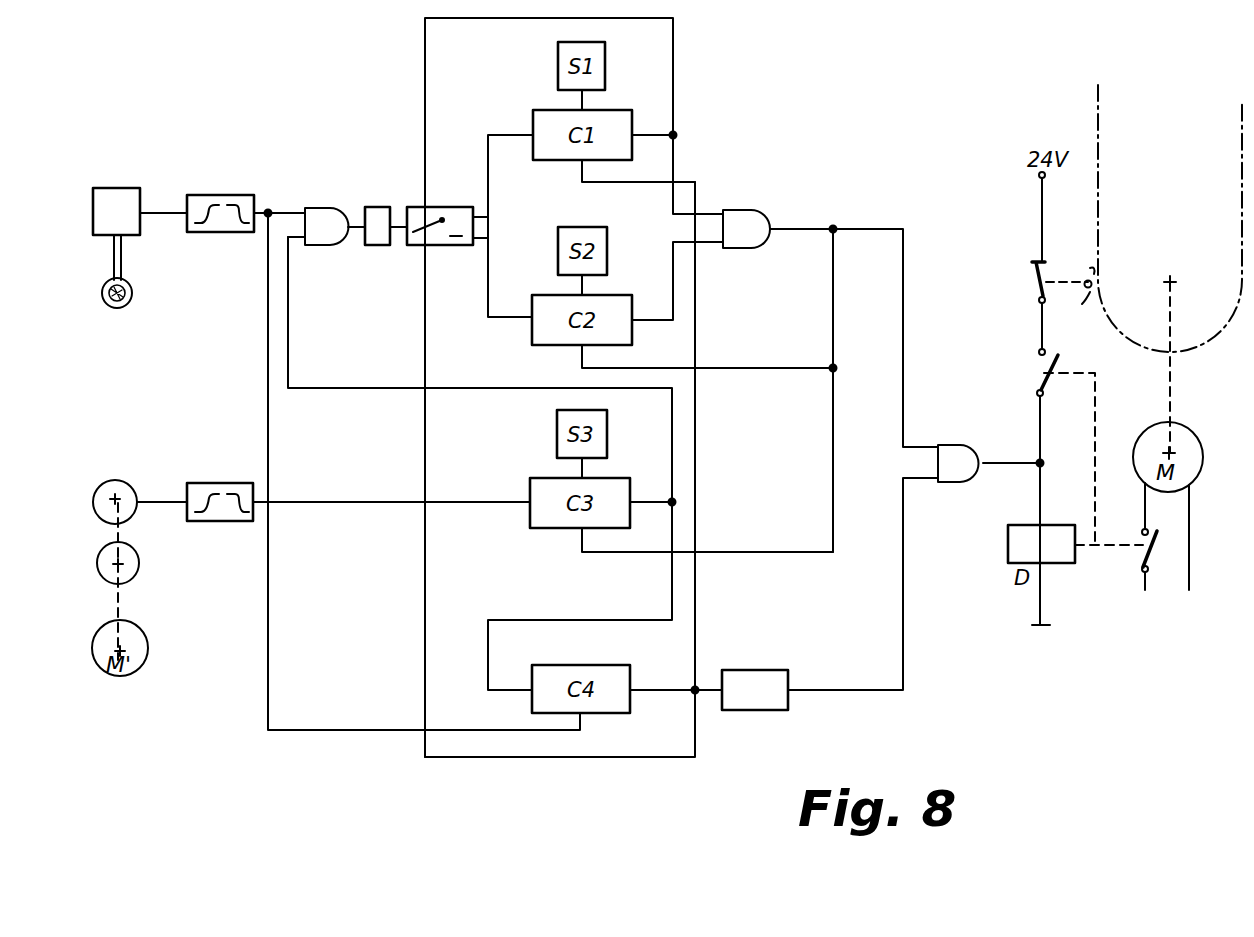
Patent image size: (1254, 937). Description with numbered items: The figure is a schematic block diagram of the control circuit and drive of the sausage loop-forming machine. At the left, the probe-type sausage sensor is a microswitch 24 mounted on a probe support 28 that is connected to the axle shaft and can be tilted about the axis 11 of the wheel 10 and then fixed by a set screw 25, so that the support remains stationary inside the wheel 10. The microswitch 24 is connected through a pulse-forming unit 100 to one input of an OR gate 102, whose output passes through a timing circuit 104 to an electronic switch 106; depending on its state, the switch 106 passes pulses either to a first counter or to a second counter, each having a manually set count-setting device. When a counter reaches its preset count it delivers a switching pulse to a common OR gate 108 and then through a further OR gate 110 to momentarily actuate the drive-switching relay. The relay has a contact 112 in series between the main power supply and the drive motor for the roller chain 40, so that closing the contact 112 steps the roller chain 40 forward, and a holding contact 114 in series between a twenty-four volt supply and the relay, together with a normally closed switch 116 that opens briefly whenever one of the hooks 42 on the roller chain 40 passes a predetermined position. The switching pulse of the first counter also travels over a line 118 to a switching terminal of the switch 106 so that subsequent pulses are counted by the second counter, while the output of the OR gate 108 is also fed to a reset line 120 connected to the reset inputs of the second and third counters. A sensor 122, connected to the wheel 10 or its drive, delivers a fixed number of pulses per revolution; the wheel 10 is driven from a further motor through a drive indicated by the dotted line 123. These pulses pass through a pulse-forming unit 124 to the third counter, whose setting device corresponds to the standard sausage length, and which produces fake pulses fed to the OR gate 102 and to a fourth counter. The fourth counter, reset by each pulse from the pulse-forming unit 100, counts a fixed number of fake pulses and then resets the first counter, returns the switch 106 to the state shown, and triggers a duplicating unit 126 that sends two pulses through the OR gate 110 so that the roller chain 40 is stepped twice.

The wheel 10 is at (139, 571).
The axis 11 is at (108, 310).
The microswitch 24 is at (108, 195).
The set screw 25 is at (131, 286).
The probe support 28 is at (124, 260).
The roller chain 40 is at (1238, 264).
The hooks 42 is at (1080, 300).
The pulse-forming unit 100 is at (200, 195).
The OR gate 102 is at (314, 208).
The timing circuit 104 is at (376, 207).
The electronic switch 106 is at (444, 207).
The OR gate 108 is at (746, 210).
The OR gate 110 is at (956, 445).
The contact 112 is at (1154, 556).
The holding contact 114 is at (1044, 373).
The normally closed switch 116 is at (1036, 290).
The line 118 is at (455, 18).
The reset line 120 is at (835, 310).
The sensor 122 is at (116, 481).
The drive 123 is at (120, 610).
The pulse-forming unit 124 is at (209, 483).
The duplicating unit 126 is at (752, 670).